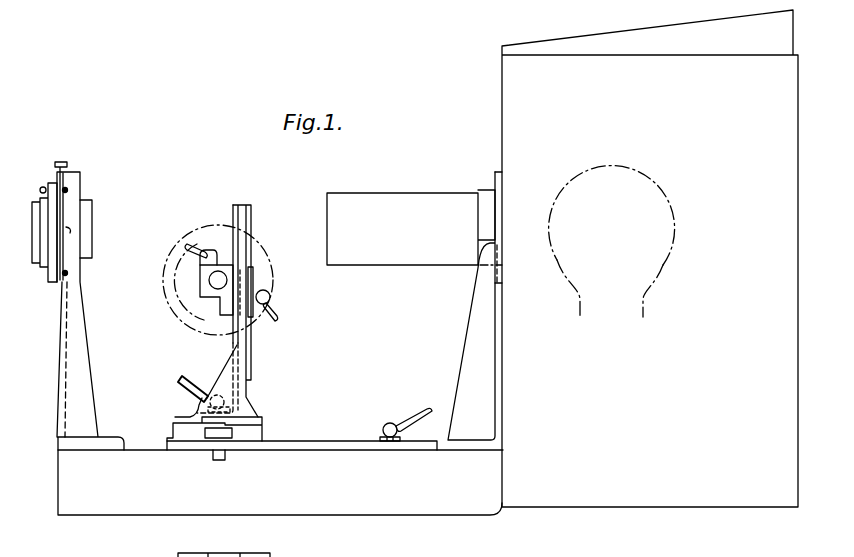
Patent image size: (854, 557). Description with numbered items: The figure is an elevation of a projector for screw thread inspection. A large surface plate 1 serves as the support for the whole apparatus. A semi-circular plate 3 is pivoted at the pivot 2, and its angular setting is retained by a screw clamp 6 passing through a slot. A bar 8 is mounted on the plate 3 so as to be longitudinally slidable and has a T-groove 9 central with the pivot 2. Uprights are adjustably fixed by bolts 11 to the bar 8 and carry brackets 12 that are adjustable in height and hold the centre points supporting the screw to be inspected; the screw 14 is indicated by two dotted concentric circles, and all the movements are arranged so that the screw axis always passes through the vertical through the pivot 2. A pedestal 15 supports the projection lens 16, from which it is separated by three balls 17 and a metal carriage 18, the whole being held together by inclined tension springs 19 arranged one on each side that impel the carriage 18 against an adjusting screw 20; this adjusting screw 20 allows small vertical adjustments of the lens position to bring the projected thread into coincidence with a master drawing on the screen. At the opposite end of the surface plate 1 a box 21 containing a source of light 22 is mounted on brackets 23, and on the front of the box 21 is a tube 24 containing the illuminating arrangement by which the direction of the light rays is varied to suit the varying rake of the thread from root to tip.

The surface plate 1 is at (280, 482).
The pivot 2 is at (215, 462).
The semi-circular plate 3 is at (336, 426).
The screw clamp 6 is at (399, 427).
The bar 8 is at (180, 433).
The T-groove 9 is at (225, 436).
The bolts 11 is at (183, 378).
The brackets 12 is at (226, 322).
The screw 14 is at (186, 315).
The pedestal 15 is at (75, 413).
The projection lens 16 is at (44, 200).
The balls 17 is at (67, 190).
The metal carriage 18 is at (62, 253).
The tension springs 19 is at (68, 230).
The adjusting screw 20 is at (67, 165).
The box 21 is at (650, 258).
The source of light 22 is at (643, 190).
The brackets 23 is at (475, 328).
The tube 24 is at (395, 206).